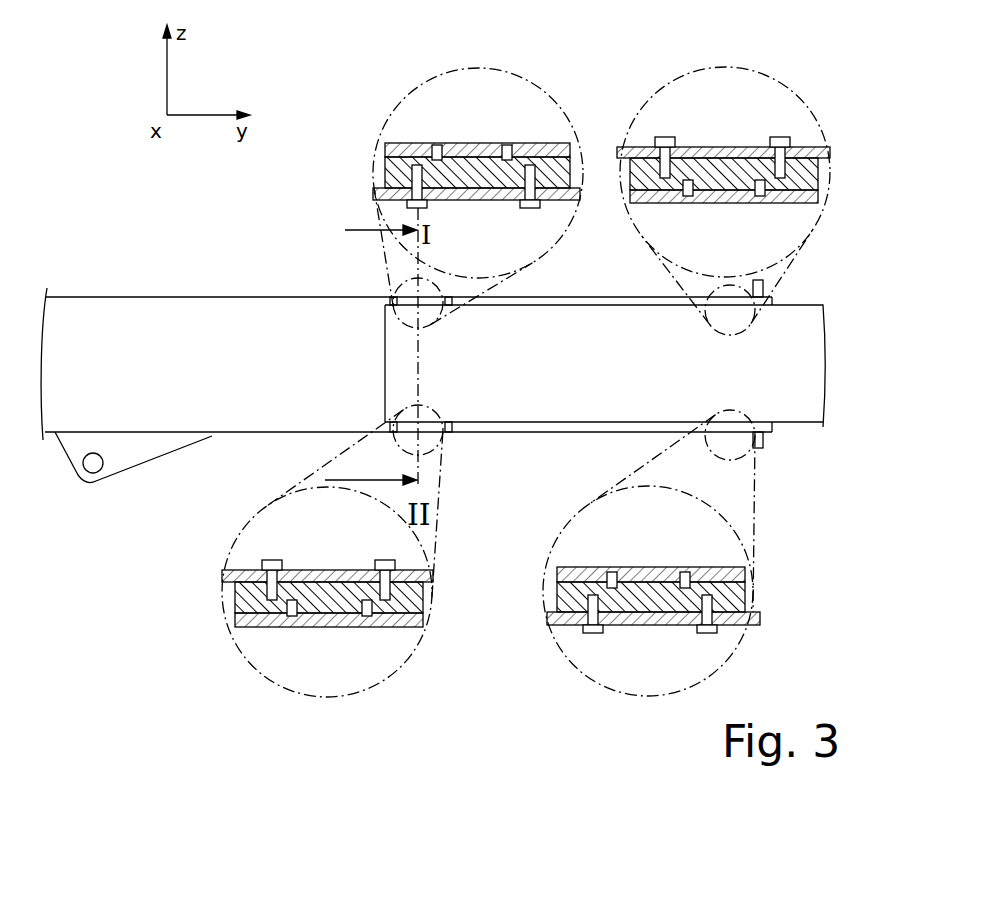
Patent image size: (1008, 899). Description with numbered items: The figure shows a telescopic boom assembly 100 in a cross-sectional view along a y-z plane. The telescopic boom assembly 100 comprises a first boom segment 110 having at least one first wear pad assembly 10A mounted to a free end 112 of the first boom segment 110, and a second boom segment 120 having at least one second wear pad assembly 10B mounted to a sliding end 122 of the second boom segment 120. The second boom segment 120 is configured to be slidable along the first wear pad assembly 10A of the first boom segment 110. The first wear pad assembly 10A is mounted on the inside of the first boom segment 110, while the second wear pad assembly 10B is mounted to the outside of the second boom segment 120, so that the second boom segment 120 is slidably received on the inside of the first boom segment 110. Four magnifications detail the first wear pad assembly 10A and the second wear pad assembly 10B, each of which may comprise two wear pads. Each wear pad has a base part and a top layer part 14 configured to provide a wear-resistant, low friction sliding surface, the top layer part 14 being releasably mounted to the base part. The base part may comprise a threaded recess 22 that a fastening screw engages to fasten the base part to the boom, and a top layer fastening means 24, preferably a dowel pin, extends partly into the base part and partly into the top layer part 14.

The telescopic boom assembly 100 is at (138, 273).
The first boom segment 110 is at (243, 410).
The free end 112 is at (780, 450).
The second boom segment 120 is at (537, 395).
The sliding end 122 is at (424, 368).
The first wear pad assembly 10A is at (772, 217).
The second wear pad assembly 10B is at (436, 126).
The top layer part 14 is at (470, 143).
The threaded recess 22 is at (412, 181).
The top layer fastening means 24 is at (517, 145).